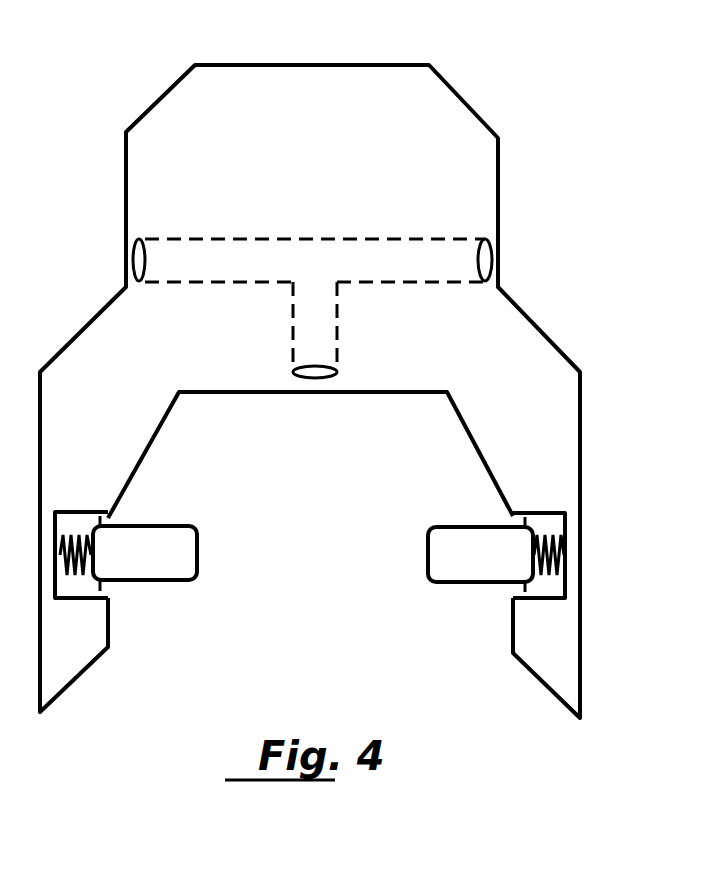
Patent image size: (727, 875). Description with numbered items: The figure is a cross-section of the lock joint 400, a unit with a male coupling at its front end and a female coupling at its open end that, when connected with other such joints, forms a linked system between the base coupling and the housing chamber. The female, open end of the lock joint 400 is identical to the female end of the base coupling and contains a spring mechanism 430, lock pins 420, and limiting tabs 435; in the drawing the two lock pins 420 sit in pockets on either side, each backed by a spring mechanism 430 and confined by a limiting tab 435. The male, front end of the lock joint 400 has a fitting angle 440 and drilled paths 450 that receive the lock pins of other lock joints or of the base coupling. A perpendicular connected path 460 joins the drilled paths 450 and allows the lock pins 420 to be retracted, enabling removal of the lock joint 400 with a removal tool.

The lock joint 400 is at (71, 256).
The lock pins 420 is at (418, 557).
The spring mechanism 430 is at (72, 583).
The limiting tabs 435 is at (506, 595).
The fitting angle 440 is at (482, 96).
The drilled paths 450 is at (497, 259).
The perpendicular connected path 460 is at (315, 379).